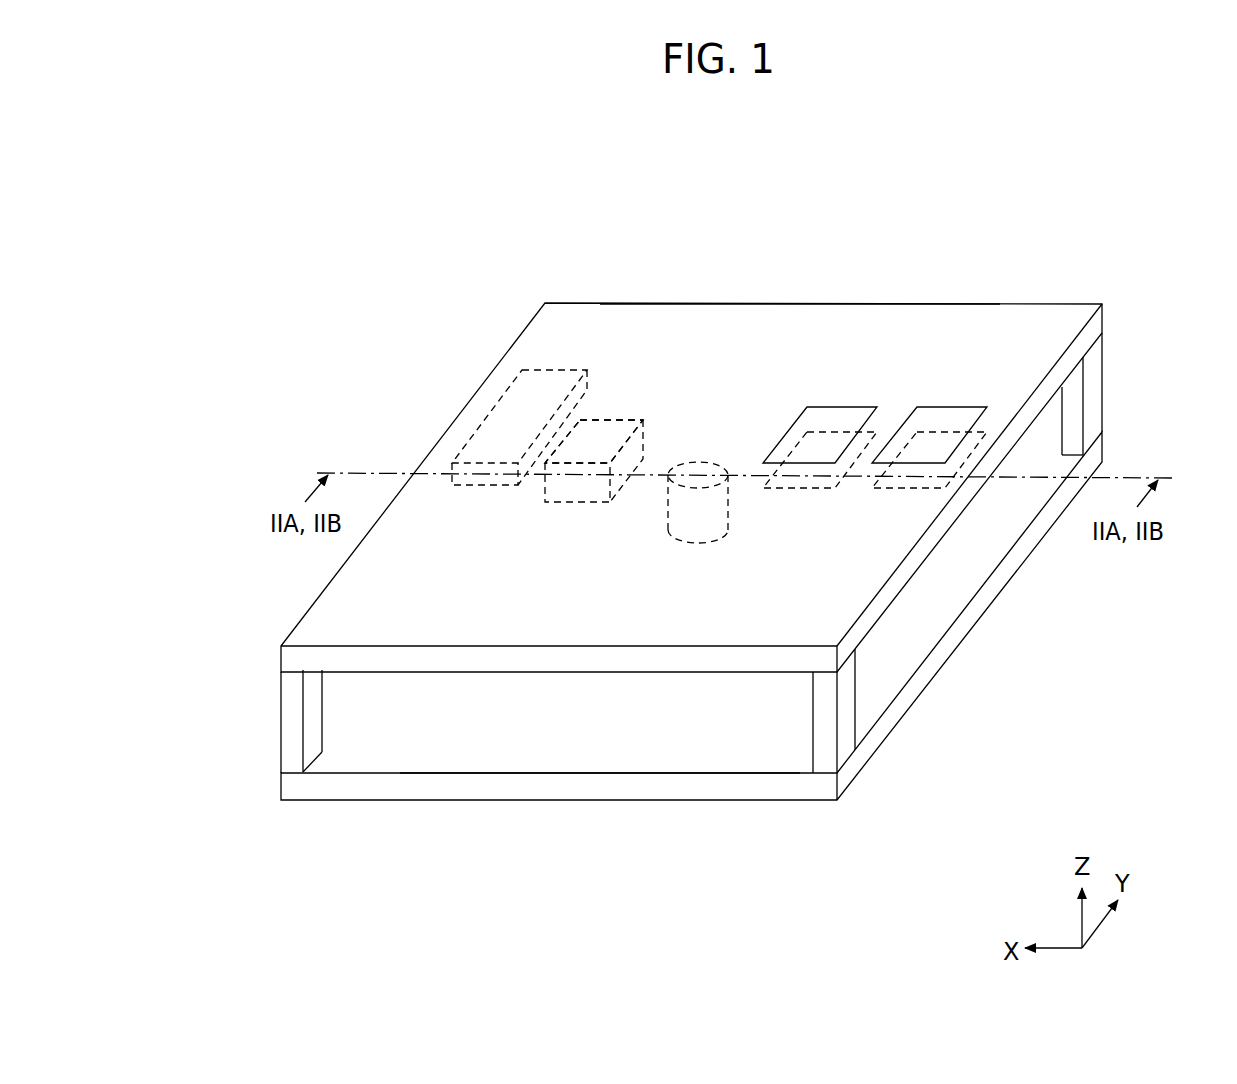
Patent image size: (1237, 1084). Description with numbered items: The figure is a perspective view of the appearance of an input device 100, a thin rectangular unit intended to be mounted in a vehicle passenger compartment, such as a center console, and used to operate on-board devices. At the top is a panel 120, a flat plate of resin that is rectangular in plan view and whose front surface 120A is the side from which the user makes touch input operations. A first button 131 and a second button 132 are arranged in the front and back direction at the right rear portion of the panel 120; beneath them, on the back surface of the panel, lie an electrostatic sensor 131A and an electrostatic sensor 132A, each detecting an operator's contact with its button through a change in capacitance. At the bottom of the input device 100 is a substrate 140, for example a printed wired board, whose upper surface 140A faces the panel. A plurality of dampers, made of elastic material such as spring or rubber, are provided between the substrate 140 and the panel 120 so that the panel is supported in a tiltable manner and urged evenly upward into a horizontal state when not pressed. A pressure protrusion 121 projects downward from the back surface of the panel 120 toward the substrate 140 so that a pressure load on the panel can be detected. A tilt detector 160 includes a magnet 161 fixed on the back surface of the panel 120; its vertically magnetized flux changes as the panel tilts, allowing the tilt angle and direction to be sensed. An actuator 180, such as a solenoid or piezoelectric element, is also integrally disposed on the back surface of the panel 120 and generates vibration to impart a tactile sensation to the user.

The input device 100 is at (1156, 110).
The panel 120 is at (688, 303).
The front surface 120A is at (763, 337).
The pressure protrusion 121 is at (698, 460).
The first button 131 is at (934, 407).
The electrostatic sensor 131A is at (985, 430).
The second button 132 is at (838, 407).
The electrostatic sensor 132A is at (873, 432).
The substrate 140 is at (550, 785).
The upper surface 140A is at (690, 732).
The tilt detector 160 is at (608, 418).
The magnet 161 is at (594, 441).
The actuator 180 is at (555, 369).